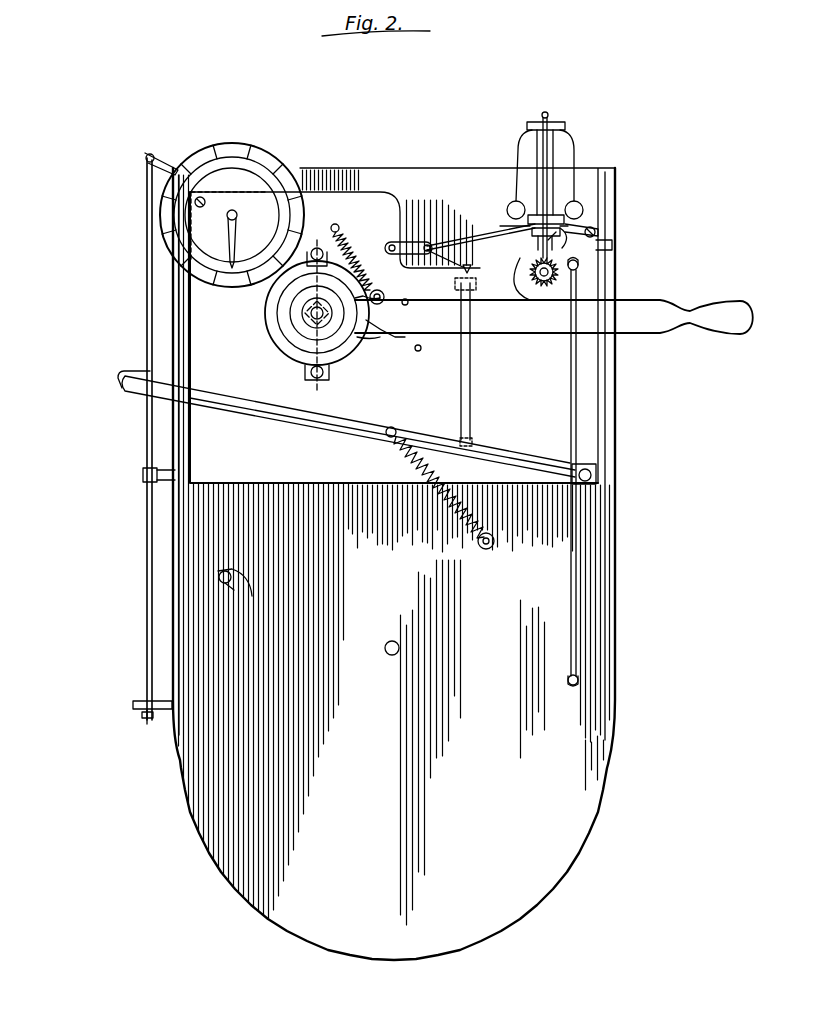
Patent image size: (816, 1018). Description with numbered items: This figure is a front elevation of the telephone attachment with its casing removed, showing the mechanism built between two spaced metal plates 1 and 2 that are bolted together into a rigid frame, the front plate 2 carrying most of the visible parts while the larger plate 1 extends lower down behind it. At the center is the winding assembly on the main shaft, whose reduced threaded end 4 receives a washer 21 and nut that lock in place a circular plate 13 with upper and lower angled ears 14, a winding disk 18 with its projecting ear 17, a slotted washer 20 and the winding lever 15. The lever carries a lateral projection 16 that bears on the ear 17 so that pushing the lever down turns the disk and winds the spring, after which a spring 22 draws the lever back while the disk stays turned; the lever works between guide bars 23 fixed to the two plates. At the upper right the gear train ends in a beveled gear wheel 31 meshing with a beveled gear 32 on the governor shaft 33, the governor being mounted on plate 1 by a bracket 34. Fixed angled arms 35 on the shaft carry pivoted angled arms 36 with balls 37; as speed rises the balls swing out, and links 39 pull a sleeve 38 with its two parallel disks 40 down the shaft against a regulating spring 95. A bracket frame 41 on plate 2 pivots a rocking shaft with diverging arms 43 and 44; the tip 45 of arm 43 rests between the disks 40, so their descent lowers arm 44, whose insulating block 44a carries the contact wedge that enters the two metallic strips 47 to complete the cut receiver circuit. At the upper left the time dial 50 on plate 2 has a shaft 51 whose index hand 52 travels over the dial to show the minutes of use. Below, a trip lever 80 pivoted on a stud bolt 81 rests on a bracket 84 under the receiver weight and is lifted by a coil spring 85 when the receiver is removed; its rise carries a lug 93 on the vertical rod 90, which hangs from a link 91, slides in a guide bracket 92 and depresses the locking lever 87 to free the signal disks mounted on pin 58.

The metal plate 1 is at (405, 722).
The metal plate 2 is at (394, 337).
The reduced threaded end 4 is at (312, 315).
The circular plate 13 is at (366, 346).
The angled ears 14 is at (326, 391).
The winding lever 15 is at (690, 312).
The lateral projection 16 is at (392, 303).
The projecting ear 17 is at (388, 320).
The winding disk 18 is at (306, 355).
The washer 20 is at (296, 317).
The washer 21 is at (334, 322).
The spring 22 is at (347, 228).
The guide bars 23 is at (580, 385).
The beveled gear wheel 31 is at (540, 286).
The beveled gear 32 is at (575, 243).
The shaft 33 is at (548, 118).
The bracket 34 is at (562, 122).
The fixed angled arms 35 is at (528, 124).
The angled arms 36 is at (518, 150).
The balls 37 is at (508, 210).
The sleeve 38 is at (535, 228).
The links 39 is at (550, 186).
The parallel disks 40 is at (600, 232).
The bracket frame 41 is at (392, 243).
The arm 43 is at (440, 232).
The arm 44 is at (441, 271).
The block of insulating material 44a is at (481, 243).
The tip 45 is at (530, 242).
The metallic strips 47 is at (472, 388).
The time dial 50 is at (237, 160).
The shaft 51 is at (233, 207).
The index hand 52 is at (238, 242).
The pin 58 is at (400, 643).
The trip lever 80 is at (135, 395).
The stud bolt 81 is at (592, 475).
The bracket 84 is at (242, 582).
The coil spring 85 is at (438, 530).
The locking lever 87 is at (134, 705).
The vertically movable rod 90 is at (147, 300).
The link 91 is at (148, 165).
The guide bracket 92 is at (146, 482).
The lug 93 is at (124, 380).
The spring 95 is at (600, 245).